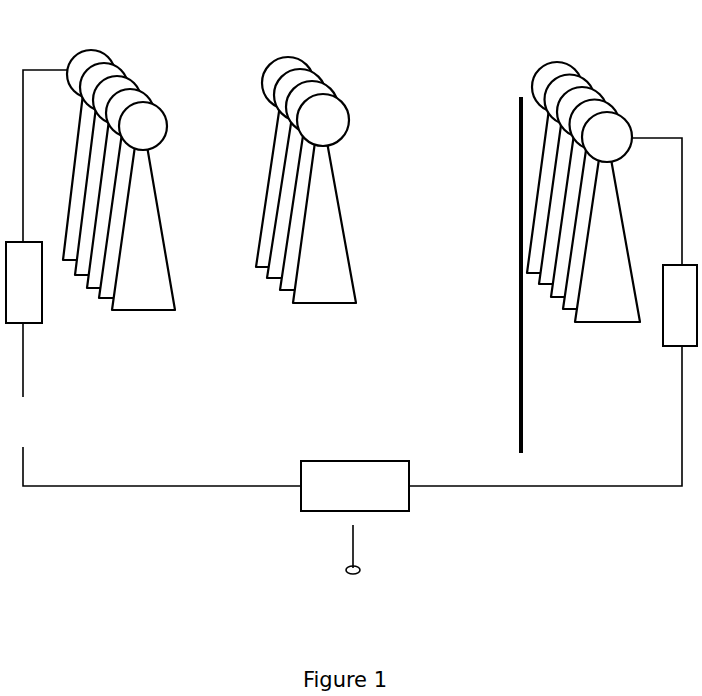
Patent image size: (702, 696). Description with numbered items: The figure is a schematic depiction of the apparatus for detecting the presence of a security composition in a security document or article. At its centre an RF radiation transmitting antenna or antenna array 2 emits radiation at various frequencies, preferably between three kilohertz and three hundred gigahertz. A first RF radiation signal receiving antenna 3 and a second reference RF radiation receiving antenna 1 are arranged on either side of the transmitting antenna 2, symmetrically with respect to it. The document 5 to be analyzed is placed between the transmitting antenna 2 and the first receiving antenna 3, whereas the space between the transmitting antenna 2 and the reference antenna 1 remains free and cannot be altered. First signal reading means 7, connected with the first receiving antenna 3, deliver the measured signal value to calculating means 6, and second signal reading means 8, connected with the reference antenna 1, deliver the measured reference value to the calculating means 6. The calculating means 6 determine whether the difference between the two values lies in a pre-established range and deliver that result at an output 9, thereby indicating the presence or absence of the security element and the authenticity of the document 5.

The second reference RF radiation receiving antenna 1 is at (119, 159).
The RF radiation transmitting antenna 2 is at (306, 158).
The first RF radiation signal receiving antenna 3 is at (583, 171).
The document 5 is at (451, 237).
The calculating means 6 is at (355, 486).
The first signal reading means 7 is at (680, 305).
The second signal reading means 8 is at (24, 282).
The output 9 is at (353, 542).